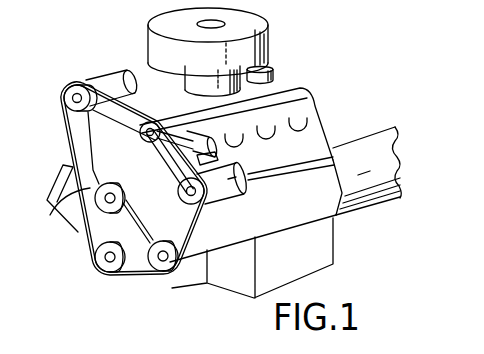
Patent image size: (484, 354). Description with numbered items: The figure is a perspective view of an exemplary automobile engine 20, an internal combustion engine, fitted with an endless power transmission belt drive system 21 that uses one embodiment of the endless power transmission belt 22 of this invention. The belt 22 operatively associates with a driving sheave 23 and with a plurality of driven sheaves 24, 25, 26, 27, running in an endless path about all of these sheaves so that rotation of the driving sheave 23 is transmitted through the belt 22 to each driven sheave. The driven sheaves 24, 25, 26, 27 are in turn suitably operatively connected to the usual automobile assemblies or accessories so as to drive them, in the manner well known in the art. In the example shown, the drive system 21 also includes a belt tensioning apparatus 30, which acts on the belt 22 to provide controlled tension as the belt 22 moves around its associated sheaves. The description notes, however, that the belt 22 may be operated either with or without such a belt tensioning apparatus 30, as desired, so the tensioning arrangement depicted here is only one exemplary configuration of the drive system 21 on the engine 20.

The automobile engine 20 is at (320, 57).
The endless power transmission belt drive system 21 is at (69, 132).
The endless power transmission belt 22 is at (72, 201).
The driving sheave 23 is at (108, 273).
The driven sheave 24 is at (160, 276).
The driven sheave 25 is at (100, 212).
The driven sheave 26 is at (72, 86).
The driven sheave 27 is at (182, 188).
The belt tensioning apparatus 30 is at (190, 128).